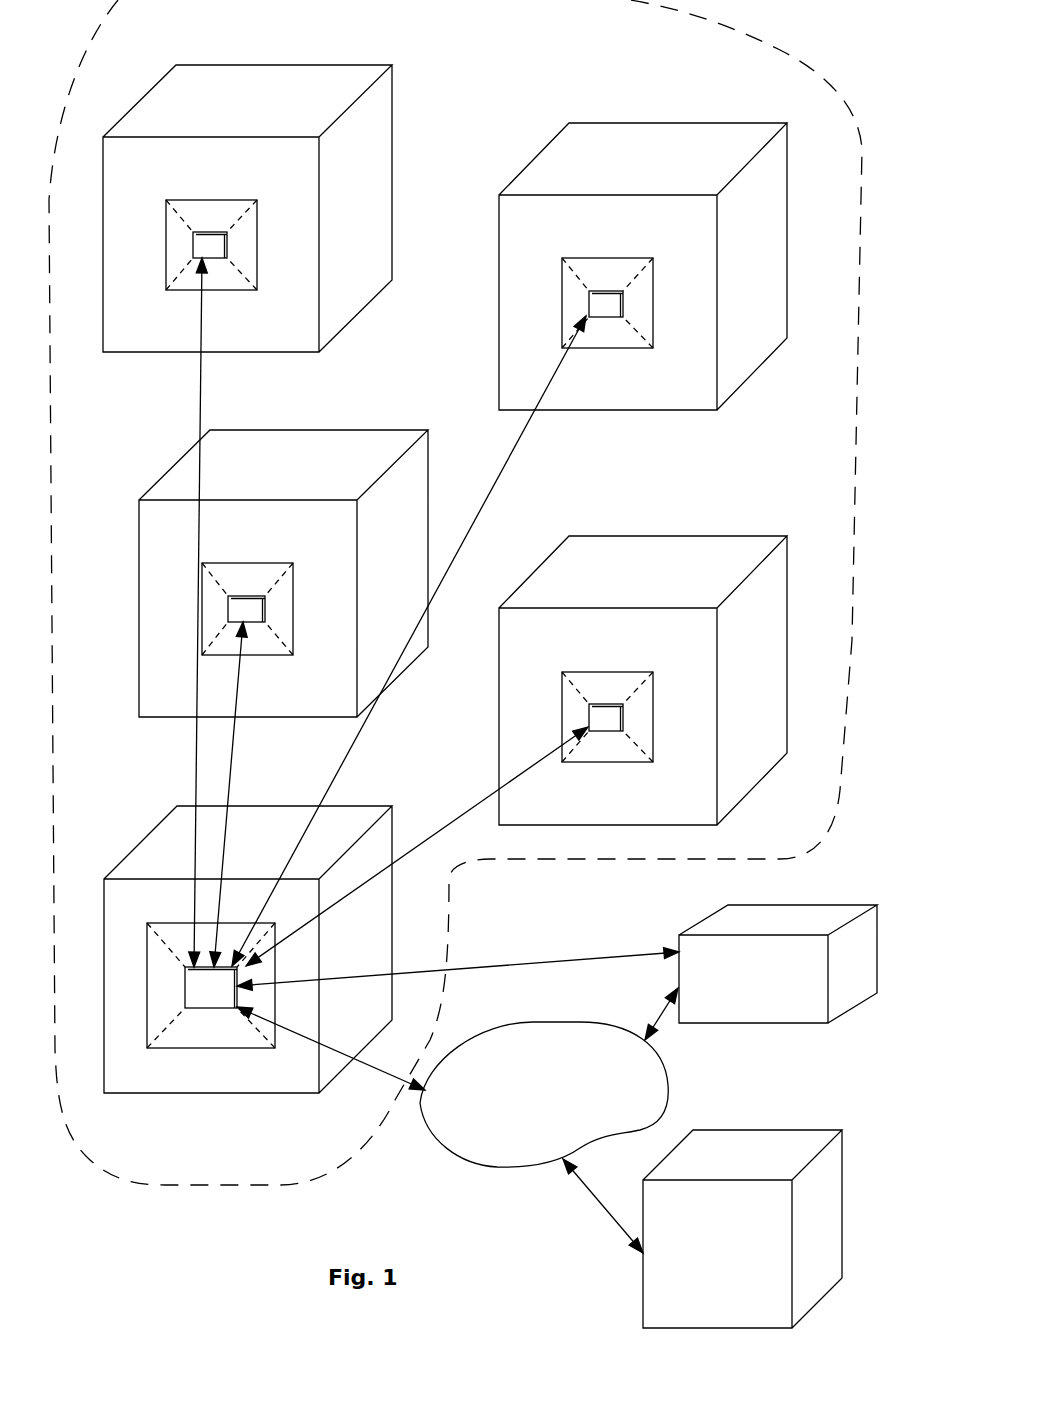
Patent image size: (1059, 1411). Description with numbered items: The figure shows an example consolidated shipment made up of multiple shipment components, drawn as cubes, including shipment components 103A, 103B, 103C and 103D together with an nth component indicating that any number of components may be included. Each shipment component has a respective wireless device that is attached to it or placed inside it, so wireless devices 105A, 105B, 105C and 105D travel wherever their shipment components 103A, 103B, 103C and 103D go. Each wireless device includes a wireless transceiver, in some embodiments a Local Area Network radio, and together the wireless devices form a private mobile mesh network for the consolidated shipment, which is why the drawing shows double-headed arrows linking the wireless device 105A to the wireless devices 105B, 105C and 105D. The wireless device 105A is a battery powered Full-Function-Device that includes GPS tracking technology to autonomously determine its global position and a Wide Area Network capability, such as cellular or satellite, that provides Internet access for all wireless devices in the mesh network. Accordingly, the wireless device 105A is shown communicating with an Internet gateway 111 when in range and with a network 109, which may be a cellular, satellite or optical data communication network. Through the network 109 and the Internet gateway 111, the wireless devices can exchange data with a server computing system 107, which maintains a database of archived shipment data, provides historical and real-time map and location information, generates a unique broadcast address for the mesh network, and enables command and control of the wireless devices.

The shipment component 103D is at (688, 141).
The wireless device 105D is at (606, 303).
The shipment component 103C is at (327, 448).
The wireless device 105C is at (247, 608).
The shipment component 103B is at (688, 556).
The wireless device 105B is at (606, 716).
The shipment component 103A is at (157, 842).
The wireless device 105A is at (212, 988).
The Internet gateway 111 is at (805, 925).
The network 109 is at (662, 1095).
The server computing system 107 is at (768, 1148).